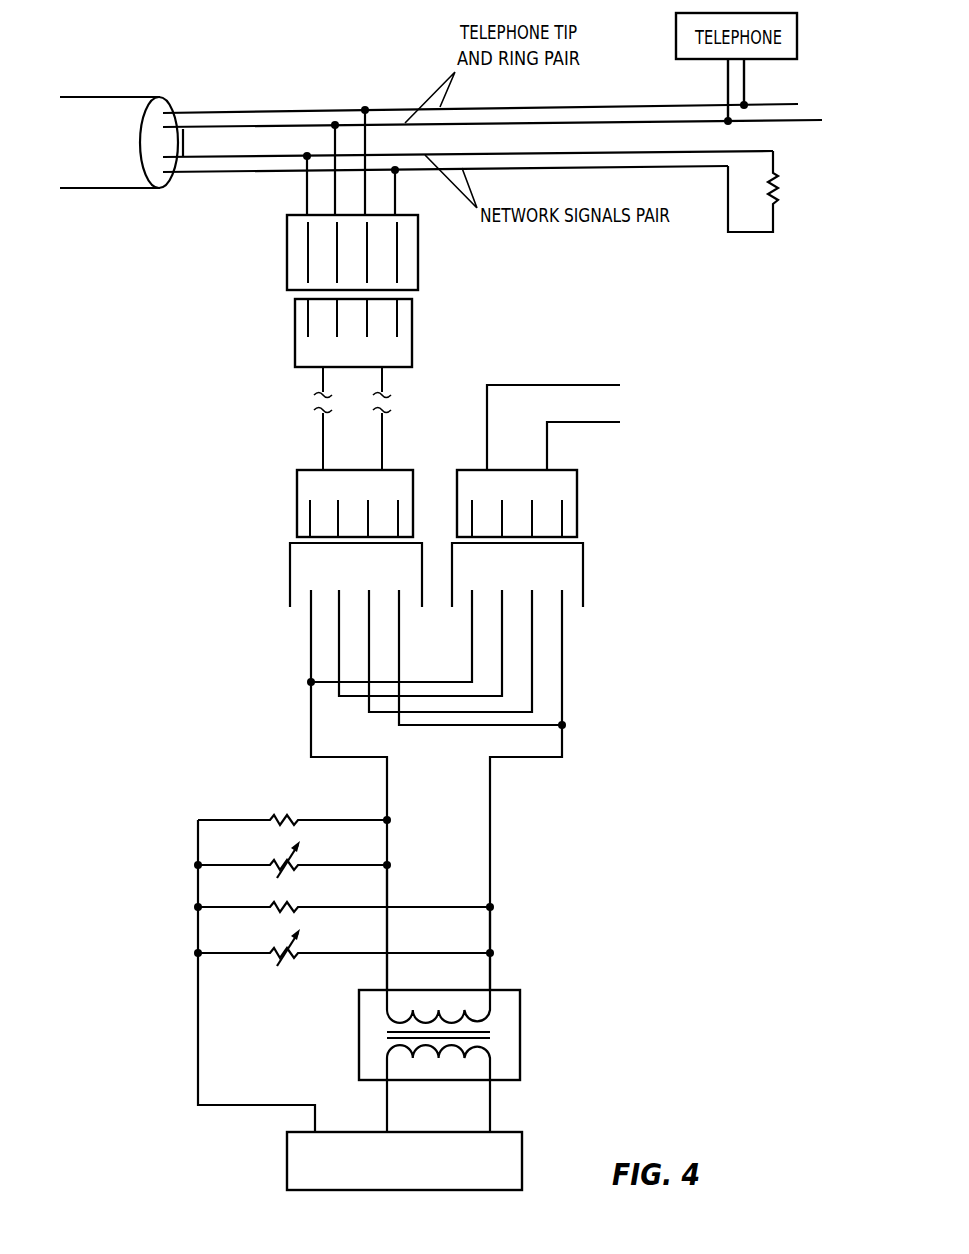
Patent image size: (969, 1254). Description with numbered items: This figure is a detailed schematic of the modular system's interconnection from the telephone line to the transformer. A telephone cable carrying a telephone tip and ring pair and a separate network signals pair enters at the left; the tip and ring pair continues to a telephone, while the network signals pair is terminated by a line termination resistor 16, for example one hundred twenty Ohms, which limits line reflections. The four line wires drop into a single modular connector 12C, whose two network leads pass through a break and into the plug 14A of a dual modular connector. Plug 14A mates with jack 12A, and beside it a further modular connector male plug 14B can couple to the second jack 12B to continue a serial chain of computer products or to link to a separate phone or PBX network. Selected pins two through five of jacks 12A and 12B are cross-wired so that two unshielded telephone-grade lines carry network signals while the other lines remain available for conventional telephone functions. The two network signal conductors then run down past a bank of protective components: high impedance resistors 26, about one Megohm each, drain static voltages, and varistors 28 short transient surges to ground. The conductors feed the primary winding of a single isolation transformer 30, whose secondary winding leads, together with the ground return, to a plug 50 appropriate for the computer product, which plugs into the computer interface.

The line termination resistor 16 is at (782, 187).
The single RJ-11 modular connector 12C is at (418, 270).
The RJ-11 modular connector plug portion 14A is at (297, 490).
The modular connector male plug 14B is at (577, 487).
The RJ-11 modular connector jack 12A is at (290, 557).
The RJ-11 modular connector jack 12B is at (583, 556).
The high impedance resistor 26 is at (298, 815).
The varistor 28 is at (275, 860).
The isolation transformer 30 is at (536, 979).
The plug 50 is at (522, 1163).